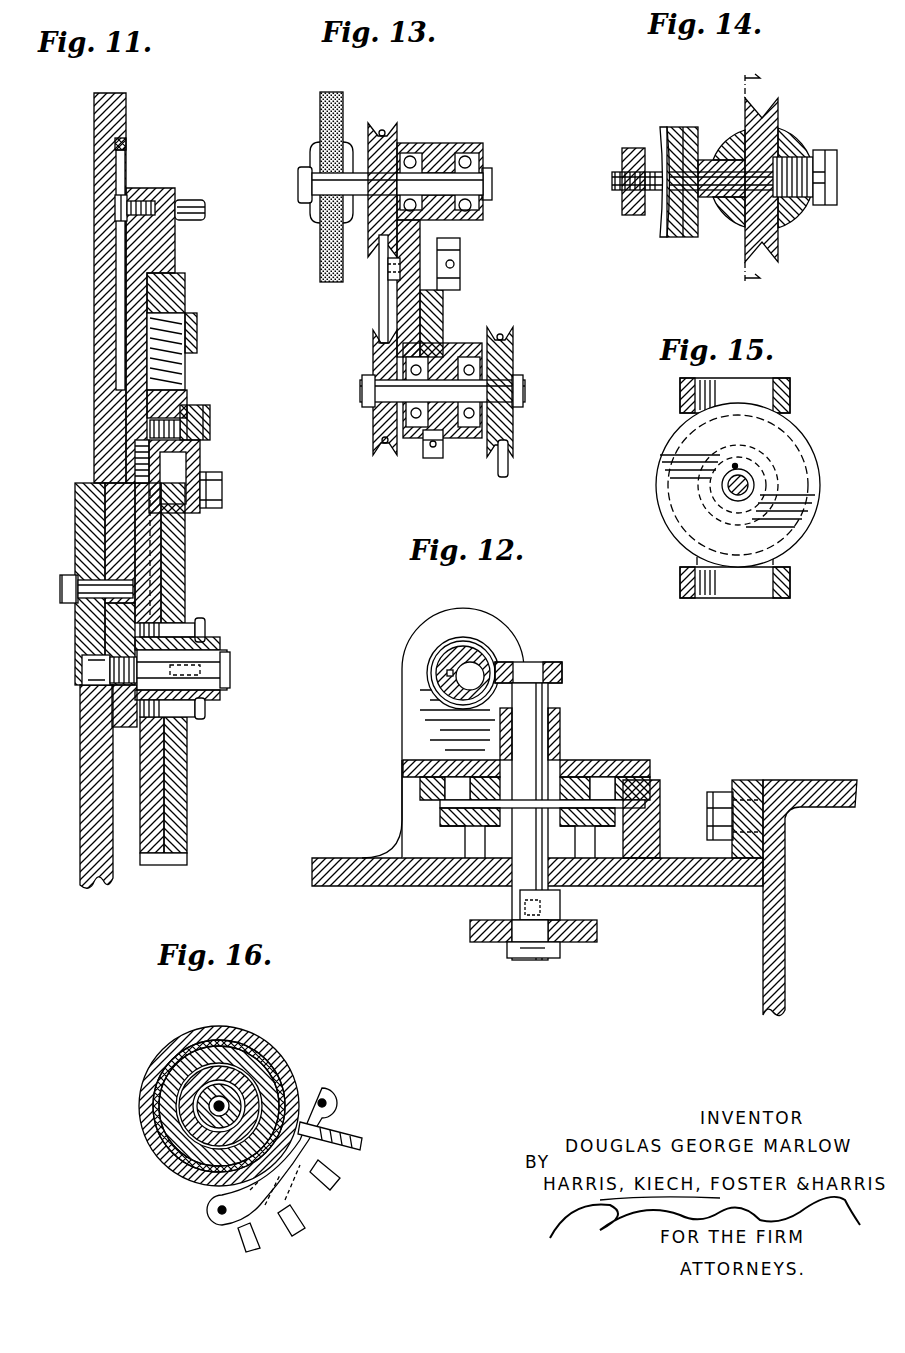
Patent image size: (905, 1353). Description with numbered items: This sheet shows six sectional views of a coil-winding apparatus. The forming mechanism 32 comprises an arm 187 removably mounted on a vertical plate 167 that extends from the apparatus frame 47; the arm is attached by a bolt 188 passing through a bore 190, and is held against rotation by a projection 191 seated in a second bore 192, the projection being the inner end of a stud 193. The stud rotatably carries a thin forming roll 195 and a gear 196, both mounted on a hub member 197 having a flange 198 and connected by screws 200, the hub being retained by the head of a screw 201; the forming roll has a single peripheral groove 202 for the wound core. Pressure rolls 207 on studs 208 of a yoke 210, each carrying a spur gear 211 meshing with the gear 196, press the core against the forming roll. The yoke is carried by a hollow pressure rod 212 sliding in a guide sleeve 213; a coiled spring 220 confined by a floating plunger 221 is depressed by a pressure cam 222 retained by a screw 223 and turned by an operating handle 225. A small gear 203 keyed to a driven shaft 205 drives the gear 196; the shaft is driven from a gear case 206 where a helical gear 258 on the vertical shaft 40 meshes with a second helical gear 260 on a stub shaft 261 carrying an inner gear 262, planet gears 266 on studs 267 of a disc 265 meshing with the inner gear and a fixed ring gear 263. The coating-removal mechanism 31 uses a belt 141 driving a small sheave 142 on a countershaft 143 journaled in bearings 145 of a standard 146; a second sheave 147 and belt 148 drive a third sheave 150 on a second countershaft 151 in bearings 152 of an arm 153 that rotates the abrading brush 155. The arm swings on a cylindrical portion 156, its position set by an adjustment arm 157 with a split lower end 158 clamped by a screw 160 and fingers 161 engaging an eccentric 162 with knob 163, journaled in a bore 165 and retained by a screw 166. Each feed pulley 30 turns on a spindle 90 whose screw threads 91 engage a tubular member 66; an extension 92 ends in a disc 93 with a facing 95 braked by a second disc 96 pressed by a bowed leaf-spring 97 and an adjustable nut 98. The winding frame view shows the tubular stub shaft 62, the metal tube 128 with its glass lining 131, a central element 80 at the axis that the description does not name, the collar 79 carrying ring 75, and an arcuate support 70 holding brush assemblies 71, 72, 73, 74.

In FIG. 14, the feed pulley 30 is at (775, 112).
In FIG. 15, the feed pulley 30 is at (792, 440).
In FIG. 13, the coating-removal mechanism 31 is at (510, 136).
In FIG. 11, the forming mechanism 32 is at (179, 146).
In FIG. 12, the vertical shaft 40 is at (455, 670).
In FIG. 12, the apparatus frame 47 is at (770, 965).
In FIG. 16, the tubular stub shaft 62 is at (185, 1085).
In FIG. 14, the tubular member 66 is at (795, 142).
In FIG. 15, the tubular member 66 is at (792, 580).
In FIG. 16, the arcuate support 70 is at (325, 1094).
In FIG. 16, the brush assembly 71 is at (357, 1137).
In FIG. 16, the brush assembly 72 is at (340, 1172).
In FIG. 16, the brush assembly 73 is at (310, 1220).
In FIG. 16, the brush assembly 74 is at (270, 1235).
In FIG. 16, the ring 75 is at (200, 1187).
In FIG. 16, the collar 79 is at (170, 1148).
In FIG. 16, the pin 80 is at (218, 1098).
In FIG. 14, the spindle 90 is at (722, 172).
In FIG. 15, the spindle 90 is at (727, 487).
In FIG. 14, the screw threads 91 is at (800, 215).
In FIG. 14, the extension 92 is at (722, 200).
In FIG. 14, the disc 93 is at (690, 237).
In FIG. 14, the facing 95 is at (684, 128).
In FIG. 14, the second disc 96 is at (670, 135).
In FIG. 14, the bowed leaf-spring 97 is at (662, 215).
In FIG. 14, the adjustable nut 98 is at (625, 158).
In FIG. 16, the metal tube 128 is at (255, 1080).
In FIG. 16, the tubular glass lining 131 is at (160, 1104).
In FIG. 13, the belt 141 is at (510, 466).
In FIG. 13, the small sheave 142 is at (510, 362).
In FIG. 13, the countershaft 143 is at (505, 392).
In FIG. 13, the bearings 145 is at (407, 410).
In FIG. 13, the standard 146 is at (470, 440).
In FIG. 13, the second sheave 147 is at (377, 358).
In FIG. 13, the belt 148 is at (384, 312).
In FIG. 13, the third sheave 150 is at (381, 128).
In FIG. 13, the second countershaft 151 is at (440, 180).
In FIG. 13, the bearings 152 is at (410, 145).
In FIG. 13, the arm 153 is at (400, 300).
In FIG. 13, the rotary abrading means 155 is at (320, 112).
In FIG. 13, the cylindrical portion 156 is at (470, 350).
In FIG. 13, the adjustment arm 157 is at (445, 300).
In FIG. 13, the split lower end 158 is at (434, 460).
In FIG. 13, the screw 160 is at (428, 448).
In FIG. 13, the fingers 161 is at (445, 286).
In FIG. 13, the eccentric 162 is at (455, 256).
In FIG. 13, the adjustment knob 163 is at (440, 240).
In FIG. 13, the bore 165 is at (398, 265).
In FIG. 13, the screw 166 is at (393, 276).
In FIG. 11, the vertical plate 167 is at (90, 778).
In FIG. 12, the vertical plate 167 is at (702, 880).
In FIG. 11, the arm 187 is at (105, 292).
In FIG. 11, the bolt 188 is at (83, 568).
In FIG. 11, the bore 190 is at (66, 596).
In FIG. 11, the projection 191 is at (85, 664).
In FIG. 11, the second bore 192 is at (82, 682).
In FIG. 11, the stud 193 is at (212, 656).
In FIG. 11, the forming roll 195 is at (182, 770).
In FIG. 11, the gear 196 is at (160, 800).
In FIG. 11, the hub member 197 is at (215, 645).
In FIG. 11, the flange 198 is at (190, 622).
In FIG. 11, the screws 200 is at (200, 713).
In FIG. 11, the screw 201 is at (215, 686).
In FIG. 11, the peripheral groove 202 is at (190, 846).
In FIG. 12, the small gear 203 is at (494, 945).
In FIG. 12, the driven shaft 205 is at (512, 905).
In FIG. 12, the gear case 206 is at (735, 798).
In FIG. 11, the pressure rolls 207 is at (172, 462).
In FIG. 11, the studs 208 is at (223, 488).
In FIG. 11, the yoke 210 is at (207, 414).
In FIG. 11, the spur gear 211 is at (138, 452).
In FIG. 11, the hollow pressure rod 212 is at (172, 395).
In FIG. 11, the guide sleeve 213 is at (198, 347).
In FIG. 11, the coiled spring 220 is at (197, 326).
In FIG. 11, the floating plunger 221 is at (185, 290).
In FIG. 11, the pressure cam 222 is at (175, 247).
In FIG. 11, the screw 223 is at (118, 206).
In FIG. 11, the operating handle 225 is at (197, 205).
In FIG. 12, the helical gear 258 is at (466, 640).
In FIG. 12, the second helical gear 260 is at (548, 662).
In FIG. 12, the stub shaft 261 is at (548, 695).
In FIG. 12, the inner gear 262 is at (572, 758).
In FIG. 12, the fixed ring gear 263 is at (652, 820).
In FIG. 12, the disc 265 is at (460, 815).
In FIG. 12, the planet gears 266 is at (603, 770).
In FIG. 12, the studs 267 is at (475, 826).